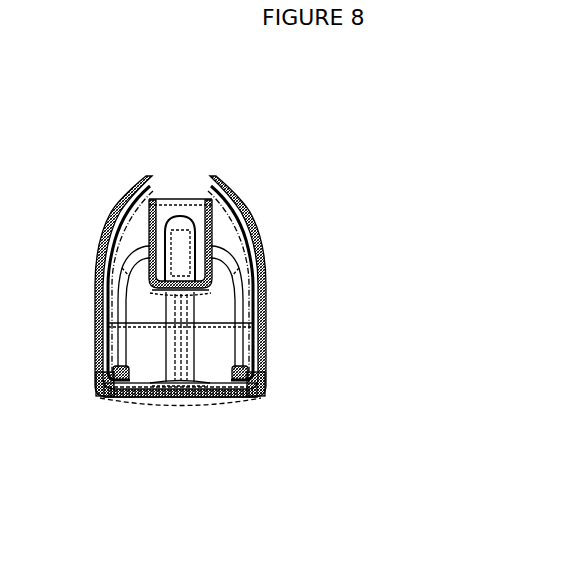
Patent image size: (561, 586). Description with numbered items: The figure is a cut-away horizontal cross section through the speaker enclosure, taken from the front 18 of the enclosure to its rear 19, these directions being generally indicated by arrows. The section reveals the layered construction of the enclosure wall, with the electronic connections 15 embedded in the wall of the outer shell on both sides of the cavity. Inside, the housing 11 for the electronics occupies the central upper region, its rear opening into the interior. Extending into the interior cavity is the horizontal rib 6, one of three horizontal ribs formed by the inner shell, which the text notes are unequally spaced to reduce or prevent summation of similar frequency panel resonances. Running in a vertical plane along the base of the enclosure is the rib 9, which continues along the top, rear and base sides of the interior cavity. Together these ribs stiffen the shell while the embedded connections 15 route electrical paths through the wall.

The rear 19 is at (308, 158).
The front 18 is at (122, 412).
The electronic connections 15 is at (100, 223).
The horizontal rib 6 is at (133, 230).
The housing for the electronics 11 is at (180, 196).
The rib 9 is at (183, 327).